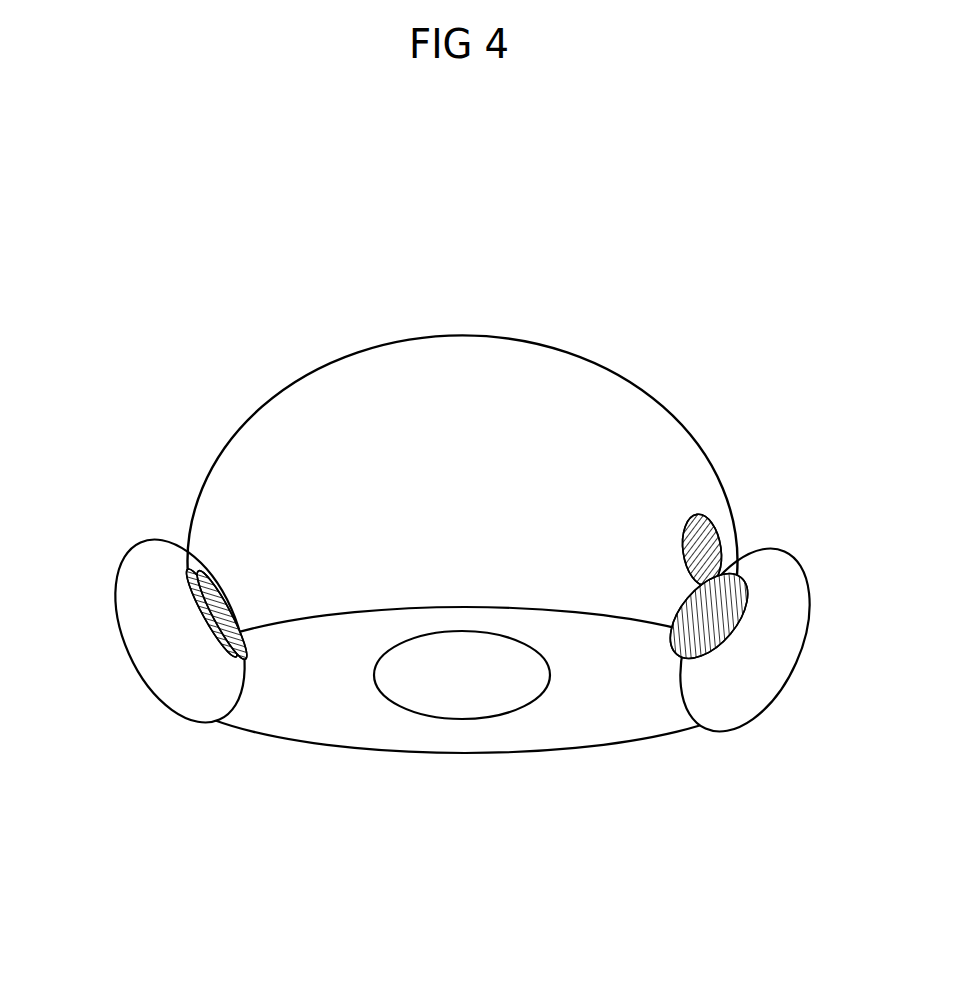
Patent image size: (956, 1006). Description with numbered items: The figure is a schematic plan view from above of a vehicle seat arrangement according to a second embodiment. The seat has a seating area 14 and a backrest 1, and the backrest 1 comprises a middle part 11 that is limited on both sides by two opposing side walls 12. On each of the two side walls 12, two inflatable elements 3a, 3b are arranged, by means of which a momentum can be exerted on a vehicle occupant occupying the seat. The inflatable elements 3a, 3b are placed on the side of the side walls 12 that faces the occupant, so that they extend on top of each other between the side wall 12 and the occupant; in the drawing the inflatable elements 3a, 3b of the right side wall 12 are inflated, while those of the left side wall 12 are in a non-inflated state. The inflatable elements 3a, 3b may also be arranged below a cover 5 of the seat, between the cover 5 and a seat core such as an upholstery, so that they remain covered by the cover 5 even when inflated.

The backrest 1 is at (472, 569).
The inflatable element 3a is at (222, 640).
The inflatable element 3b is at (200, 575).
The cover 5 is at (466, 636).
The middle part 11 is at (378, 730).
The side wall 12 is at (156, 644).
The seating area 14 is at (460, 365).